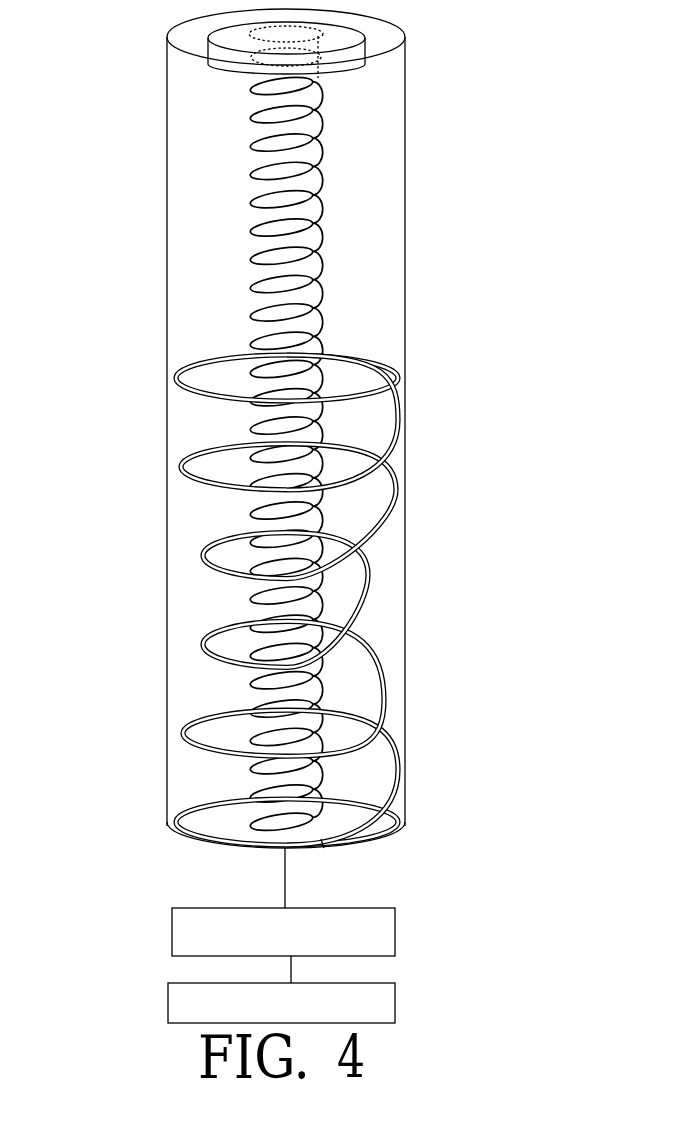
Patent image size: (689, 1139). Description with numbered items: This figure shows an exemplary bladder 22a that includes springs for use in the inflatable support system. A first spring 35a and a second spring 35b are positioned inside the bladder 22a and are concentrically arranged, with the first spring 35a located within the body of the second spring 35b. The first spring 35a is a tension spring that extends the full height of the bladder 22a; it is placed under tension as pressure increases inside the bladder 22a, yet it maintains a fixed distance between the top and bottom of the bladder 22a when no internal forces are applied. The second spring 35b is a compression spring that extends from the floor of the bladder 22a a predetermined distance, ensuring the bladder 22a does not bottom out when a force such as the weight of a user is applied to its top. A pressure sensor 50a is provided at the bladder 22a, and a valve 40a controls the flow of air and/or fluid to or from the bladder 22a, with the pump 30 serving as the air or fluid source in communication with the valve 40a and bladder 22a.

The bladder 22a is at (405, 61).
The pressure sensor 50a is at (220, 37).
The first spring 35a is at (327, 127).
The second spring 35b is at (400, 420).
The valve 40a is at (172, 928).
The pump 30 is at (168, 1010).